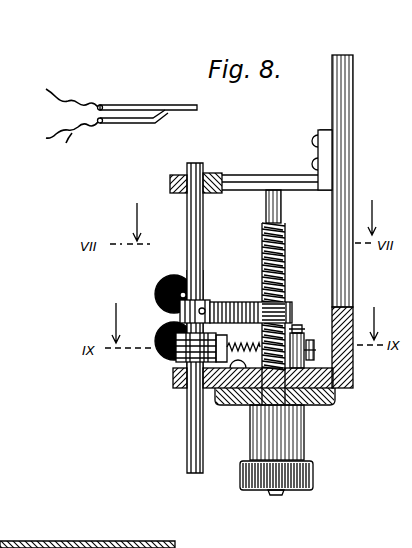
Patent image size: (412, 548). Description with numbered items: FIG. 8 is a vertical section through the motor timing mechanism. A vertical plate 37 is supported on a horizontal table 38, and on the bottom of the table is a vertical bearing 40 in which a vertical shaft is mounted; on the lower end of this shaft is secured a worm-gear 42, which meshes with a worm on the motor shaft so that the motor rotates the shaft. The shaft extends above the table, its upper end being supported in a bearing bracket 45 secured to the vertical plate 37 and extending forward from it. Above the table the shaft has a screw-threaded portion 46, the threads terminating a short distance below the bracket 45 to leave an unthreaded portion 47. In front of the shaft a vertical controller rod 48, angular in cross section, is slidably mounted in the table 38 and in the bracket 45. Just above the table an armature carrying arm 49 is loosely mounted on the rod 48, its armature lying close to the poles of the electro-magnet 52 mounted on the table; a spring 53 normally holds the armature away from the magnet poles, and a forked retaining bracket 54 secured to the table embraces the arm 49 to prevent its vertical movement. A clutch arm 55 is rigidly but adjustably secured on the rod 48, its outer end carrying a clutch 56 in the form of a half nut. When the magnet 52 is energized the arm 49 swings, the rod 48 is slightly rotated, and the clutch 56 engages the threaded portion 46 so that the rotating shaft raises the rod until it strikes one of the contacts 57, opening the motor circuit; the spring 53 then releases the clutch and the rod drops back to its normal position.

The vertical plate 37 is at (353, 99).
The horizontal table 38 is at (340, 390).
The vertical bearing 40 is at (304, 444).
The worm-gear 42 is at (314, 479).
The bearing bracket 45 is at (297, 168).
The screw-threaded portion 46 is at (262, 238).
The unthreaded portion 47 is at (283, 214).
The vertical controller rod 48 is at (200, 266).
The armature carrying arm 49 is at (182, 350).
The electro-magnet 52 is at (156, 292).
The spring 53 is at (238, 348).
The forked retaining bracket 54 is at (187, 378).
The clutch arm 55 is at (238, 302).
The clutch 56 is at (292, 309).
The contacts 57 is at (145, 104).